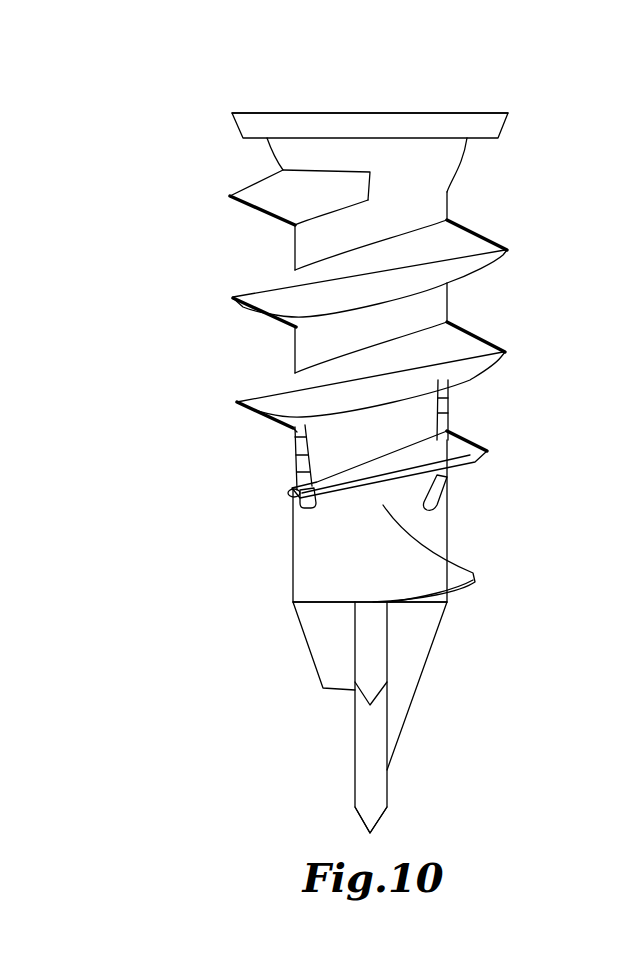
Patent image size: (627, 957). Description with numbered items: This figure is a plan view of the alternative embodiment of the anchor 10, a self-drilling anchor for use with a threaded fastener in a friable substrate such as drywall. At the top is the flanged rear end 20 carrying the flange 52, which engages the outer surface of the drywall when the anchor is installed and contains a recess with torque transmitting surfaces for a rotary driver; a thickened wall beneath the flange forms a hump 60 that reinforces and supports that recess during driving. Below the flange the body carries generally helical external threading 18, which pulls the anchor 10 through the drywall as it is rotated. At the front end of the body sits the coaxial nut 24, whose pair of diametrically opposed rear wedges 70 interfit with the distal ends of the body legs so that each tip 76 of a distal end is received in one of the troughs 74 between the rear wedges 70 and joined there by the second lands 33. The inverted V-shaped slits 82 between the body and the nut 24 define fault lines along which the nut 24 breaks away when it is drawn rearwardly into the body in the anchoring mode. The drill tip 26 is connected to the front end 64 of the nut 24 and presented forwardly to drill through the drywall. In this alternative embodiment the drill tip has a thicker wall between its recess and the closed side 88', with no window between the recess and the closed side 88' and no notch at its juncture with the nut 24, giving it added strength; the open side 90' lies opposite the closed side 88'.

The anchor 10 is at (556, 331).
The external threading 18 is at (443, 247).
The flanged rear end 20 is at (212, 129).
The nut 24 is at (315, 548).
The drill tip 26 is at (346, 825).
The second lands 33 is at (355, 506).
The flange 52 is at (297, 118).
The hump 60 is at (275, 153).
The front end of nut 64 is at (323, 692).
The rear wedges 70 is at (292, 469).
The troughs 74 is at (383, 510).
The tip of distal end 76 is at (370, 490).
The inverted V-shaped slits 82 is at (295, 445).
The closed side 88' is at (452, 686).
The open side 90' is at (317, 717).